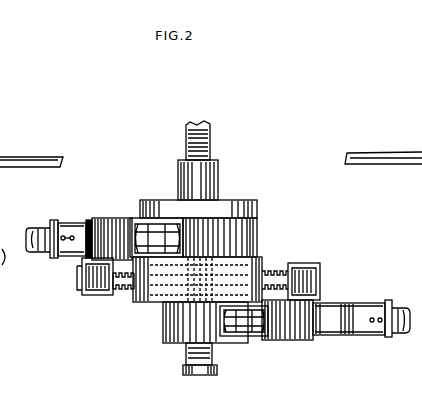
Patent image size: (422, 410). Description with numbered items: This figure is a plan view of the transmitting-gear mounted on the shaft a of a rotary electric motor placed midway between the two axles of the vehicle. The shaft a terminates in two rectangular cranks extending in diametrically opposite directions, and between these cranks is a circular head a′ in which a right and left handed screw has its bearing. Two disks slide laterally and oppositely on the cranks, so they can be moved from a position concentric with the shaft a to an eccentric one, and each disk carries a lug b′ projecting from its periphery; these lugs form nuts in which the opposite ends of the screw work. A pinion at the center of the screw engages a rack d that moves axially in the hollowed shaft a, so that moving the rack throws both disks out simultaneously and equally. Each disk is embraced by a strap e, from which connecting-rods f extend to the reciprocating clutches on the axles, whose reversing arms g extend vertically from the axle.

The motor-shaft a is at (219, 181).
The circular head a′ is at (134, 304).
The lug b′ is at (86, 300).
The rack d is at (211, 128).
The strap e is at (99, 218).
The connecting-rod f is at (32, 227).
The reversing arm g is at (31, 211).